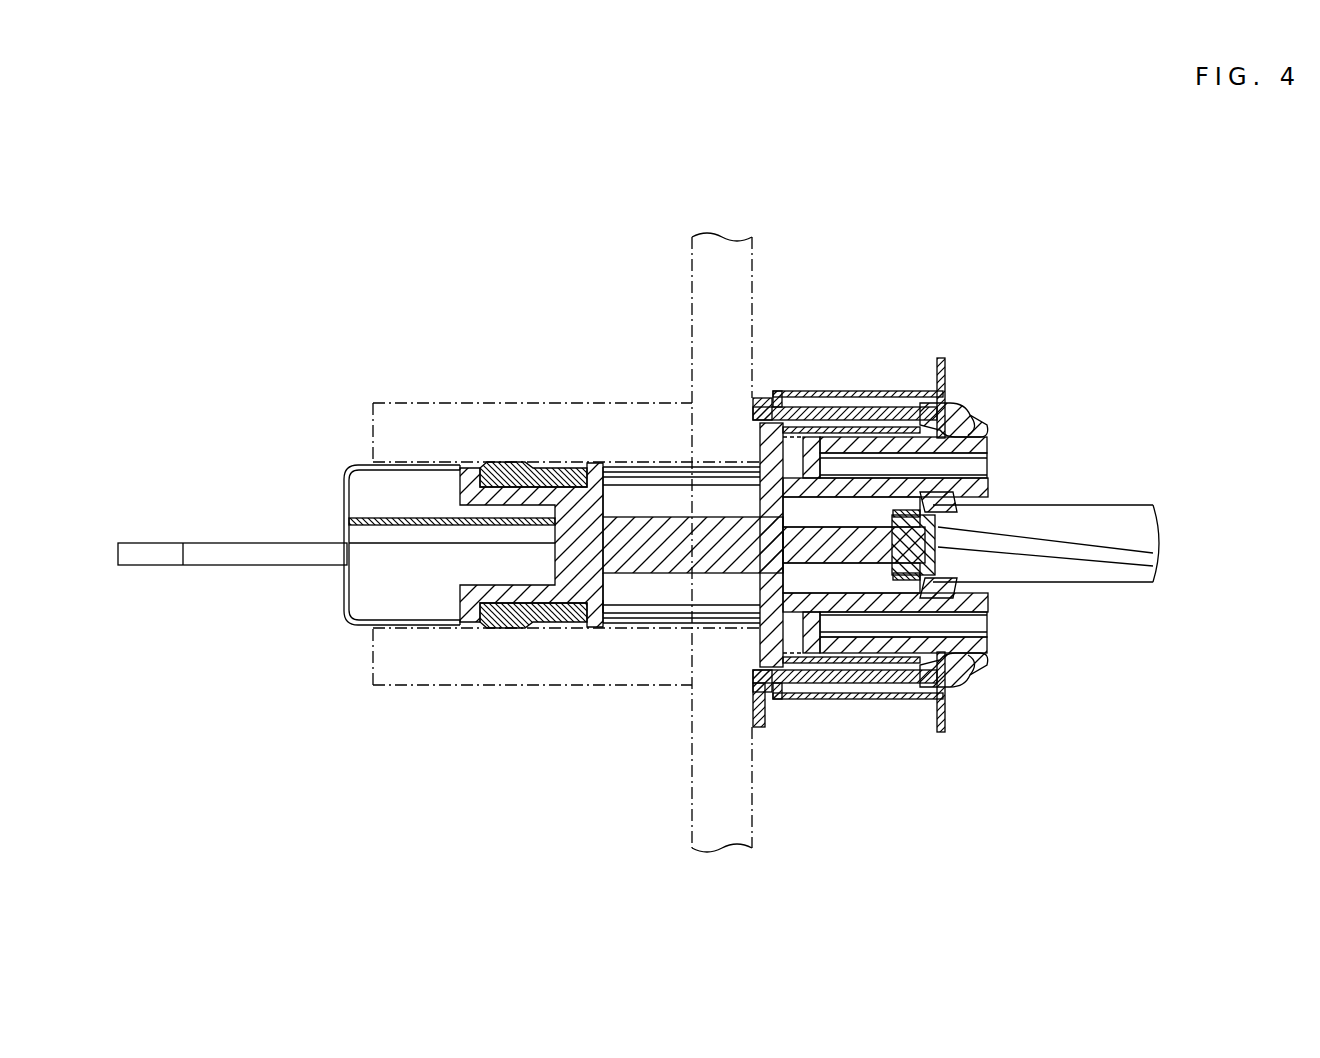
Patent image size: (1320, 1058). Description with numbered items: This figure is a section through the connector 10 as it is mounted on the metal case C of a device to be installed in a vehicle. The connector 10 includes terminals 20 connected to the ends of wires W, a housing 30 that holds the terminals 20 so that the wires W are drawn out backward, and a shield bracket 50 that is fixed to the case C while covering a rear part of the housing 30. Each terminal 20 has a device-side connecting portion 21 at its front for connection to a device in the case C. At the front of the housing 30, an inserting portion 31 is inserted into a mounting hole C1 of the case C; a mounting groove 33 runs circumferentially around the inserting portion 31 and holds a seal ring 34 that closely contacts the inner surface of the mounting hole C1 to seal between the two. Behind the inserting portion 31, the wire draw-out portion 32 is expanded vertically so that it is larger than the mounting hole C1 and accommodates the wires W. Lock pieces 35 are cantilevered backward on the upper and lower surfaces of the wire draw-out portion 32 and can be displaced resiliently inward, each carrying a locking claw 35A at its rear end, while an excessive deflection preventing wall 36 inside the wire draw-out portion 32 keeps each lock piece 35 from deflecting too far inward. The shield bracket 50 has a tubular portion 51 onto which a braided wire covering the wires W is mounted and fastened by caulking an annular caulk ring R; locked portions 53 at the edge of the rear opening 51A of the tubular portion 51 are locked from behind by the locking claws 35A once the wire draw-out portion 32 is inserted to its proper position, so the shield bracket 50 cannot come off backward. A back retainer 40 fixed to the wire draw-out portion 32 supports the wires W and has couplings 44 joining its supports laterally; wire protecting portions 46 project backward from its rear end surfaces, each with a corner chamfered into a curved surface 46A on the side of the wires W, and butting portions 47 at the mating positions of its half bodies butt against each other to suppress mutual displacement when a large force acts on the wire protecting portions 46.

The connector 10 is at (963, 284).
The terminal 20 is at (267, 575).
The device-side connecting portion 21 is at (222, 550).
The housing 30 is at (637, 622).
The inserting portion 31 is at (423, 603).
The wire draw-out portion 32 is at (855, 665).
The mounting groove 33 is at (500, 620).
The seal ring 34 is at (500, 465).
The lock piece 35 is at (867, 437).
The locking claw 35A is at (945, 405).
The excessive deflection preventing wall 36 is at (985, 466).
The back retainer 40 is at (978, 587).
The coupling 44 is at (930, 532).
The wire protecting portion 46 is at (963, 428).
The curved surface 46A is at (937, 505).
The butting portion 47 is at (957, 552).
The shield bracket 50 is at (766, 377).
The tubular portion 51 is at (830, 392).
The rear opening 51A is at (985, 606).
The locked portion 53 is at (912, 392).
The case C is at (755, 832).
The mounting hole C1 is at (613, 612).
The caulk ring R is at (813, 697).
The wire W is at (1133, 598).